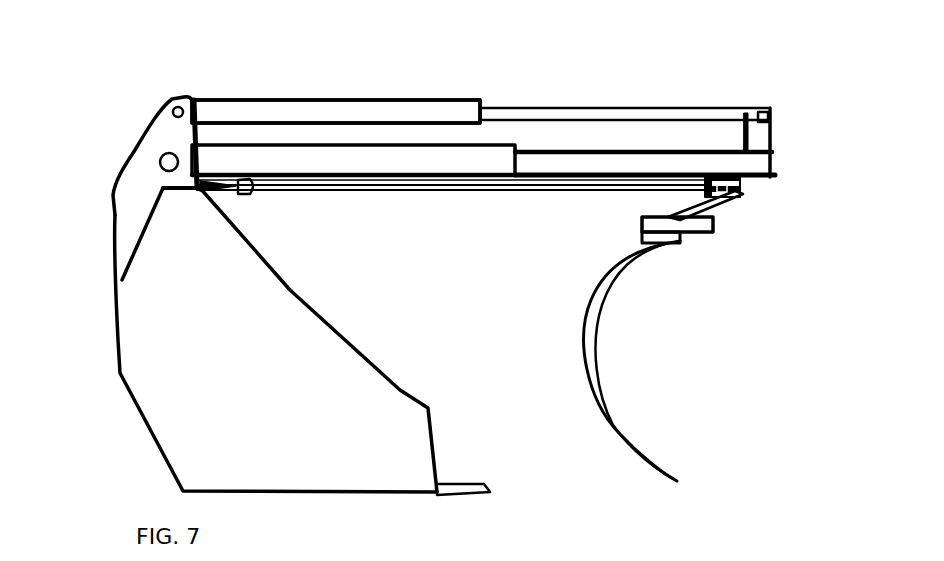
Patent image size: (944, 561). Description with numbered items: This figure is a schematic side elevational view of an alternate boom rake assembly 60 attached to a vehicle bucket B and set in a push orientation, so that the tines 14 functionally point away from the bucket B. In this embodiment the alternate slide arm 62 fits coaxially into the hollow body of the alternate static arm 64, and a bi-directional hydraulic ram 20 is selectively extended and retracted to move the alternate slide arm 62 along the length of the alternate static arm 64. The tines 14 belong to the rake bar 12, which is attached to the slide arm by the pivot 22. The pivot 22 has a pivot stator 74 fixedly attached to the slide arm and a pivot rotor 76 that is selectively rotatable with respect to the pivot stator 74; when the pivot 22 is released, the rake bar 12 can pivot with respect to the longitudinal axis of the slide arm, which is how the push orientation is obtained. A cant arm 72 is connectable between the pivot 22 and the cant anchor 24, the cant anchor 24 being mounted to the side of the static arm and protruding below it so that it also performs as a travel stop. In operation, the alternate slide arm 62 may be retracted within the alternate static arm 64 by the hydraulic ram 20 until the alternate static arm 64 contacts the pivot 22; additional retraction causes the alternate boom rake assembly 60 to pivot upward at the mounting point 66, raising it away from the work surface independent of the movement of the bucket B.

The rake bar 12 is at (775, 304).
The tines 14 is at (592, 314).
The hydraulic ram 20 is at (312, 104).
The pivot 22 is at (793, 187).
The cant anchor 24 is at (246, 187).
The alternate boom rake assembly 60 is at (643, 47).
The alternate slide arm 62 is at (602, 161).
The alternate static arm 64 is at (383, 154).
The mounting point 66 is at (162, 136).
The cant arm 72 is at (510, 181).
The pivot stator 74 is at (745, 179).
The pivot rotor 76 is at (740, 196).
The bucket B is at (303, 344).